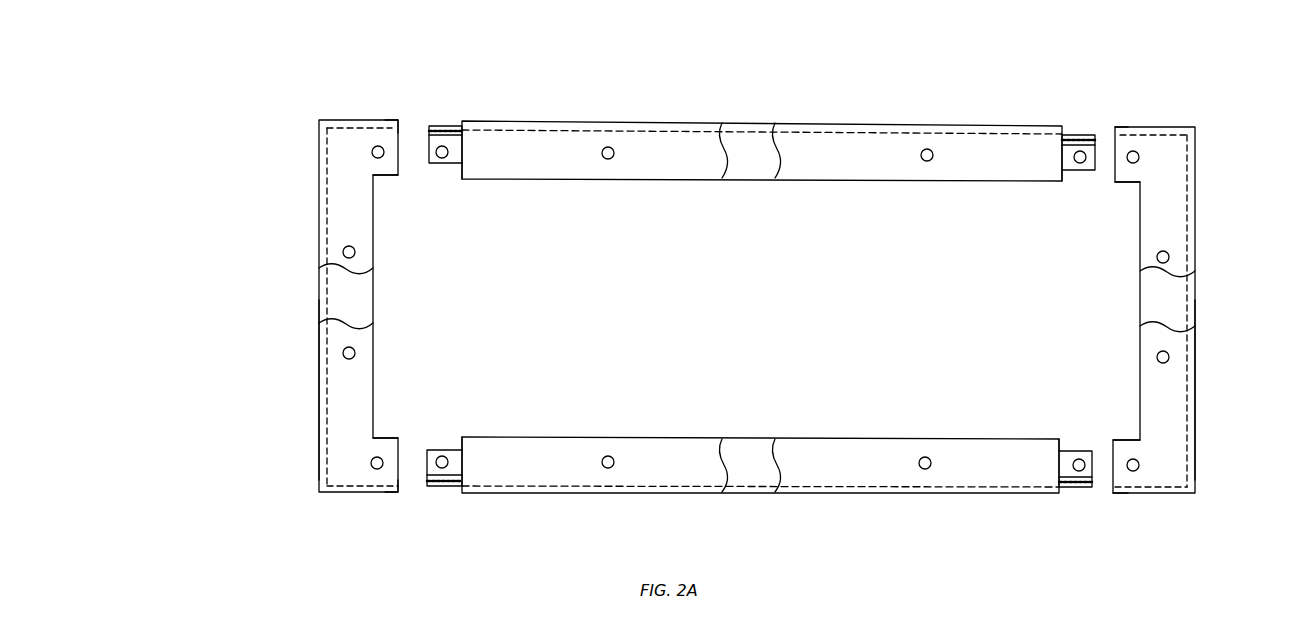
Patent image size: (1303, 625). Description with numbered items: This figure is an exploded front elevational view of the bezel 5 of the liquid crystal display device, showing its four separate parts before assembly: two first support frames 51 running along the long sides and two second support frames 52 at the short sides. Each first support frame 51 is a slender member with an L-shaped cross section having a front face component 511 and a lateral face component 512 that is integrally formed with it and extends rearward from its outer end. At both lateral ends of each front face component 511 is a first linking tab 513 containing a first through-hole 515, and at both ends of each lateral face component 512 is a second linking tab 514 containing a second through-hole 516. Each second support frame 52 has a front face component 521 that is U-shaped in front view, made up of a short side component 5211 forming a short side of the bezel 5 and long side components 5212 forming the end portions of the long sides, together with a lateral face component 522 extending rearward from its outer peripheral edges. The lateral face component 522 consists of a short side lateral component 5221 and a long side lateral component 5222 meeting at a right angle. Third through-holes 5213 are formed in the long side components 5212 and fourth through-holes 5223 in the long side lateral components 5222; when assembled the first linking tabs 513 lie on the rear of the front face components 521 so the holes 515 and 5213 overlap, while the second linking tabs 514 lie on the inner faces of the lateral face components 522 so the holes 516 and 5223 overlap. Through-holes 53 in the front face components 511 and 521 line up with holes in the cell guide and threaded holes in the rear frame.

The bezel 5 is at (252, 88).
The first support frame 51 is at (504, 145).
The front face component 511 is at (683, 157).
The lateral face component 512 is at (588, 127).
The first linking tab 513 is at (441, 160).
The second linking tab 514 is at (430, 125).
The first through-hole 515 is at (463, 166).
The second through-hole 516 is at (446, 130).
The second support frame 52 is at (343, 198).
The front face component 521 is at (352, 398).
The short side component 5211 is at (360, 340).
The long side component 5212 is at (383, 178).
The third through-hole 5213 is at (372, 152).
The lateral face component 522 is at (318, 230).
The short side lateral component 5221 is at (320, 371).
The long side lateral component 5222 is at (338, 118).
The fourth through-hole 5223 is at (376, 118).
The through-hole 53 is at (343, 254).